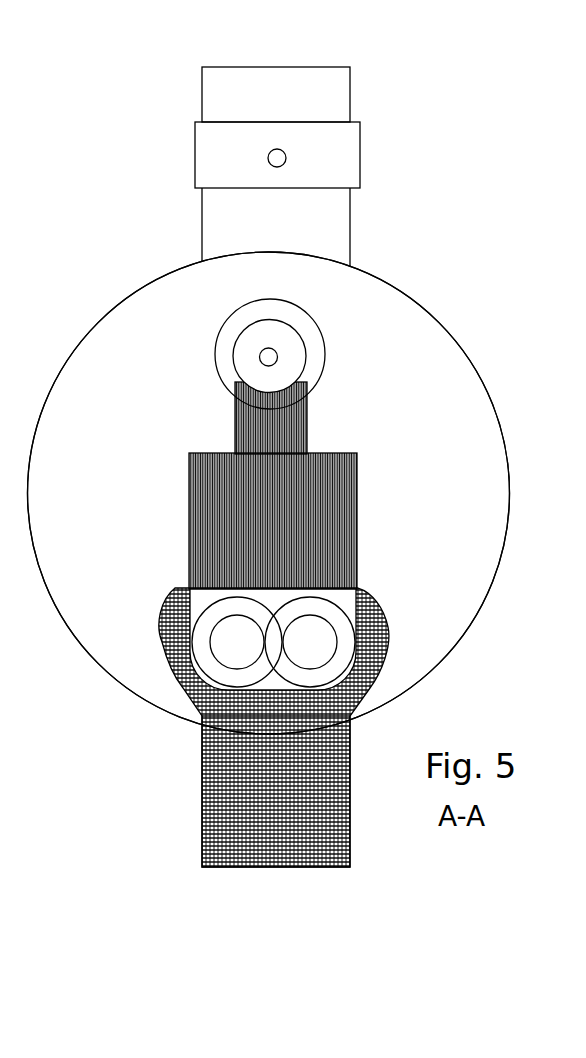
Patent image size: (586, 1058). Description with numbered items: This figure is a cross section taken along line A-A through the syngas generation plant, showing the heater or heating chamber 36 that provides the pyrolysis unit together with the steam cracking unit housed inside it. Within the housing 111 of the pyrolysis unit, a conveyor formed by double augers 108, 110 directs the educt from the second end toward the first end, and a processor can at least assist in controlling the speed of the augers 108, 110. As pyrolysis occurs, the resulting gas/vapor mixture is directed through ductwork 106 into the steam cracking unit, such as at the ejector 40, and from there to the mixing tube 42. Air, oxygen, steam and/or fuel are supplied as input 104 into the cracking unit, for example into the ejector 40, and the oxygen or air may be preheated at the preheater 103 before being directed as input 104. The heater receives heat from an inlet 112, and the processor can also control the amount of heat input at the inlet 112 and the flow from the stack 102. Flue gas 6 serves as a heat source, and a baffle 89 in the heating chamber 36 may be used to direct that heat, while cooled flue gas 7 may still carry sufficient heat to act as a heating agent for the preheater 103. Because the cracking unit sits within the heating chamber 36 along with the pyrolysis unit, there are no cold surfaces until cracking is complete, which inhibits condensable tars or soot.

The heating chamber 36 is at (490, 582).
The ejector 40 is at (247, 352).
The mixing tube 42 is at (317, 340).
The baffle 89 is at (213, 652).
The stack 102 is at (348, 98).
The preheater 103 is at (362, 155).
The input 104 is at (268, 157).
The ductwork 106 is at (308, 433).
The auger 108 is at (200, 635).
The auger 110 is at (333, 662).
The housing 111 is at (377, 603).
The inlet 112 is at (350, 830).
The cooled flue gas 7 is at (276, 250).
The flue gas 6 is at (276, 812).